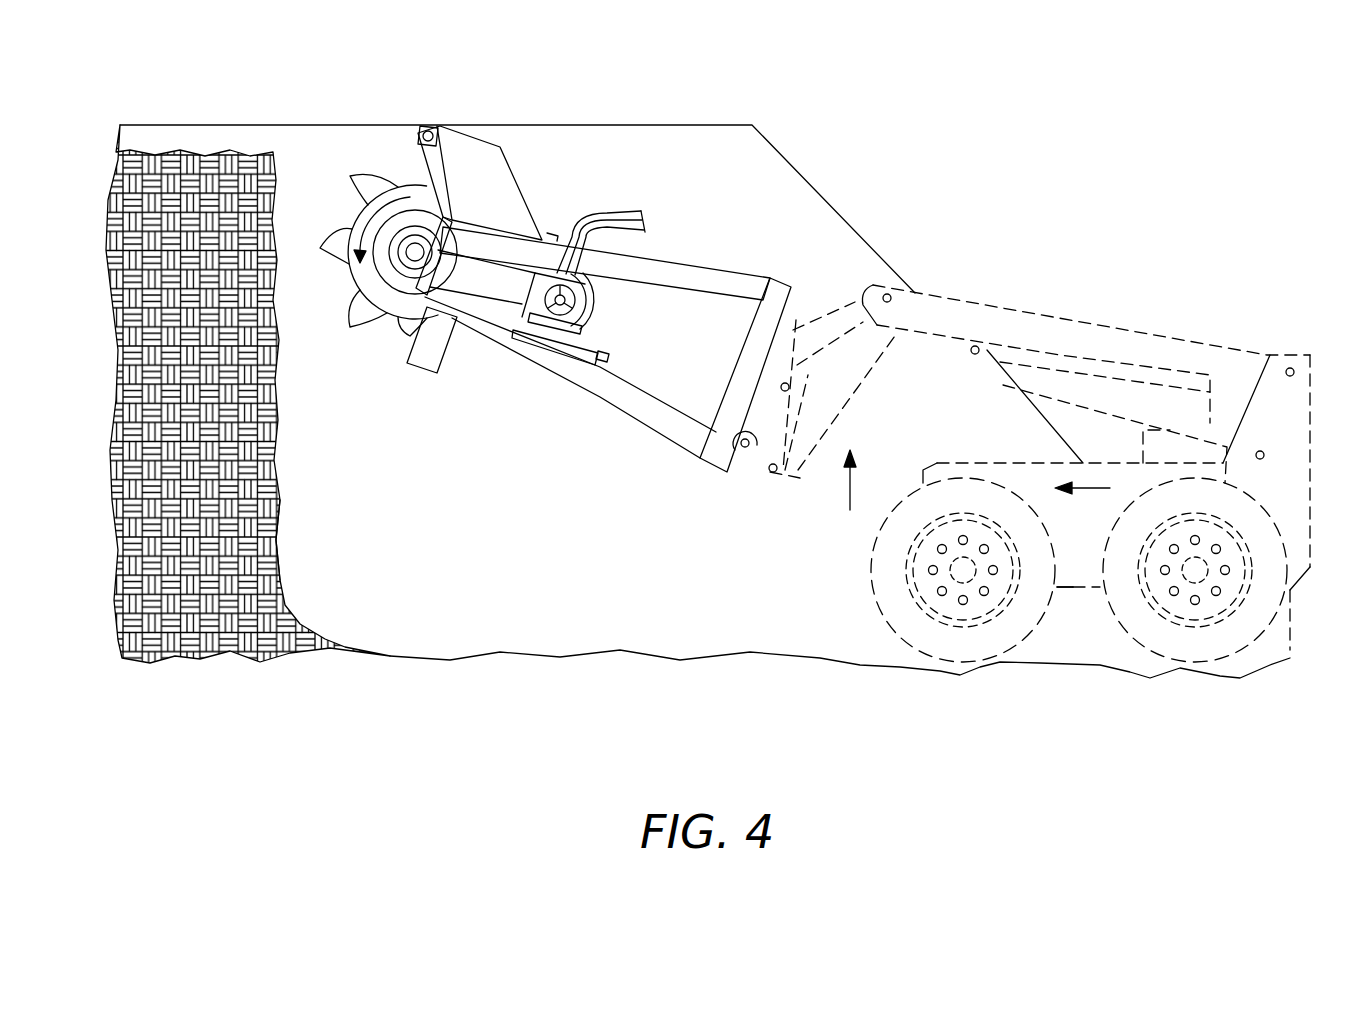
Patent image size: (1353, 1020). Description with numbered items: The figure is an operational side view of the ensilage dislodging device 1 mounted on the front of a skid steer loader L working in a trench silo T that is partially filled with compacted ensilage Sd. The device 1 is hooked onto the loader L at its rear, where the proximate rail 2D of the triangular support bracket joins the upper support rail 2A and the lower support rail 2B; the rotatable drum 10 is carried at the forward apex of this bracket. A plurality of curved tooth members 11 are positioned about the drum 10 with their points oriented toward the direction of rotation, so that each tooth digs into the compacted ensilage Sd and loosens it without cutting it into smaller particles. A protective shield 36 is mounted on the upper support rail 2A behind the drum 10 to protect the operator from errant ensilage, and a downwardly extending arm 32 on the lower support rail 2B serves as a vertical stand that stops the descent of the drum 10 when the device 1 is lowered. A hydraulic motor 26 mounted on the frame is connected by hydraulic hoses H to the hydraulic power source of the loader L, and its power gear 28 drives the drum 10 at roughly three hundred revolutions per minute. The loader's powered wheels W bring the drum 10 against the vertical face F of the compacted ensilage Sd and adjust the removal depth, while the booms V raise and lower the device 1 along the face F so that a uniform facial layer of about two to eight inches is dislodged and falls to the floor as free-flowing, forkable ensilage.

The ensilage dislodging device 1 is at (570, 110).
The upper support rail 2A is at (700, 265).
The lower support rail 2B is at (670, 427).
The proximate rail 2D is at (788, 292).
The rotatable drum 10 is at (388, 298).
The curved tooth members 11 is at (370, 172).
The hydraulic motor 26 is at (596, 335).
The power gear 28 is at (596, 302).
The downwardly extending arms 32 is at (437, 352).
The protective shield 36 is at (467, 147).
The hydraulic hoses H is at (608, 206).
The trench top surface T is at (772, 143).
The vertical face F is at (280, 478).
The compacted ensilage Sd is at (283, 543).
The booms V is at (1082, 332).
The powered wheels W is at (883, 615).
The skid steer loader L is at (1073, 588).